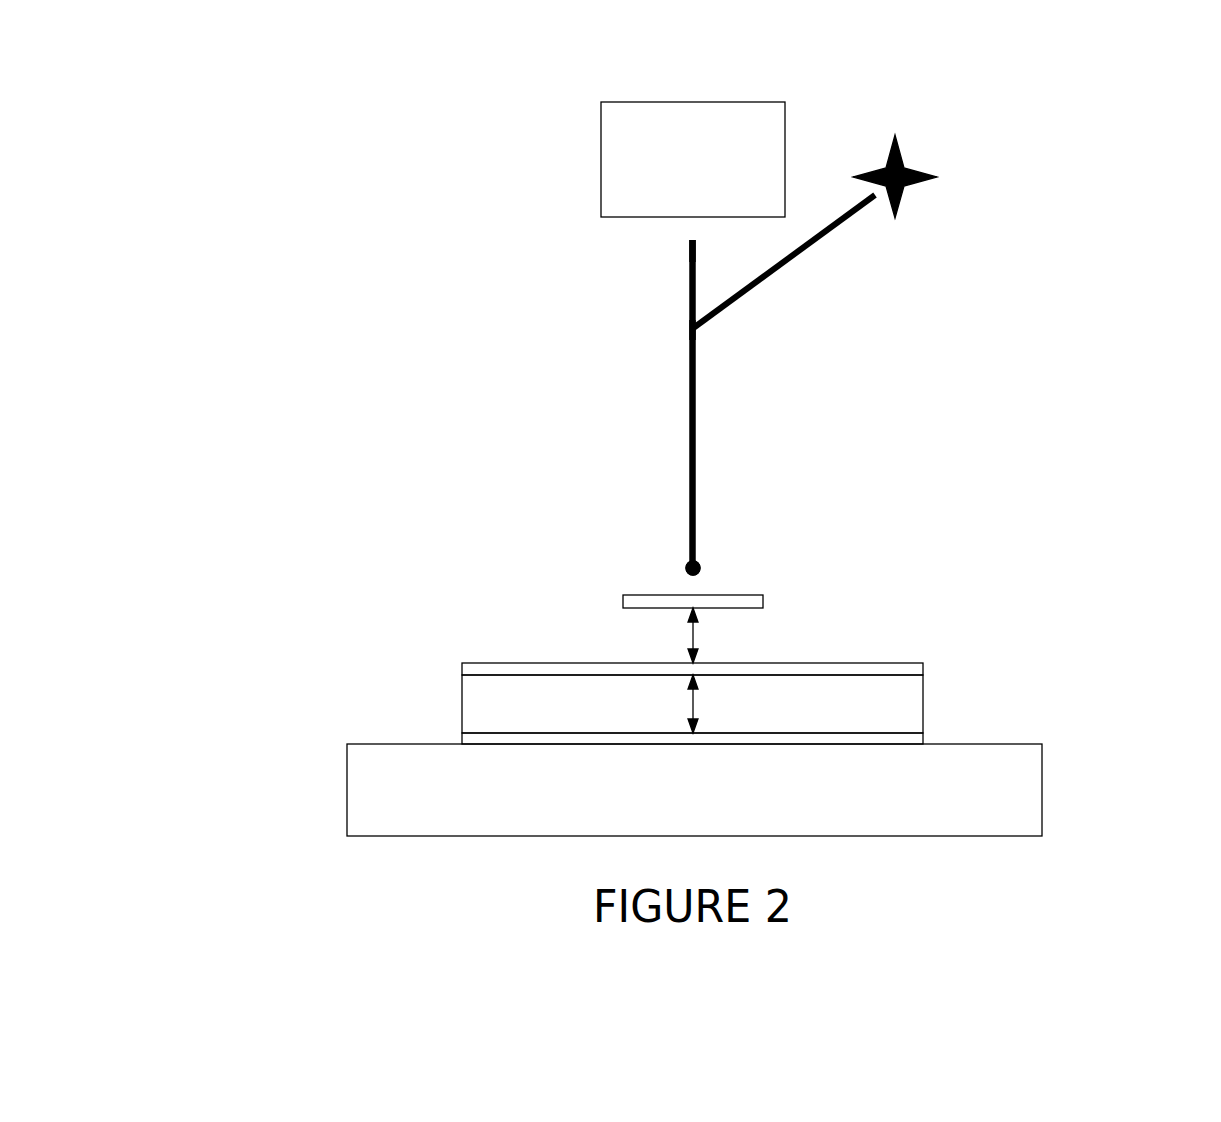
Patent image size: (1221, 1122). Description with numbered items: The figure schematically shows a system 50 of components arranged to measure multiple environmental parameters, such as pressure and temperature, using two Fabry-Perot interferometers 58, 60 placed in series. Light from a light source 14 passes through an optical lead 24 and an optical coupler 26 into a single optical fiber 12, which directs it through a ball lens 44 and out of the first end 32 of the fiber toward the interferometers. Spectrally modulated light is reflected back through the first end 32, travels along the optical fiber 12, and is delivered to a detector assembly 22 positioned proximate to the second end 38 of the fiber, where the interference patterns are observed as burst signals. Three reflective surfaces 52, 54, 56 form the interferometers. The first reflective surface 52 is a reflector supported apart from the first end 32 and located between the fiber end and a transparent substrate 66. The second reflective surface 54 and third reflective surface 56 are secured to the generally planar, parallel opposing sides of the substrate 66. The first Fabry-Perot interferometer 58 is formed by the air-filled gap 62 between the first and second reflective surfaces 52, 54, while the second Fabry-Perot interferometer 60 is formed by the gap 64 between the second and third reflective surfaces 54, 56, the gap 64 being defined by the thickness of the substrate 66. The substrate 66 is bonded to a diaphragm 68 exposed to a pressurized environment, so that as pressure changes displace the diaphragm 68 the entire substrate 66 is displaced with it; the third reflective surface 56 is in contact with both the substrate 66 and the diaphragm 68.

The optical fiber 12 is at (697, 432).
The light source 14 is at (912, 158).
The detector assembly 22 is at (635, 148).
The optical lead 24 is at (835, 232).
The optical coupler 26 is at (694, 331).
The first end 32 is at (698, 557).
The second end 38 is at (690, 240).
The ball lens 44 is at (688, 564).
The system 50 is at (366, 419).
The first reflective surface 52 is at (765, 593).
The second reflective surface 54 is at (925, 663).
The third reflective surface 56 is at (925, 732).
The first Fabry-Perot interferometer 58 is at (539, 611).
The second Fabry-Perot interferometer 60 is at (403, 658).
The gap 62 is at (719, 635).
The gap 64 is at (713, 704).
The substrate 66 is at (462, 718).
The diaphragm 68 is at (1028, 790).